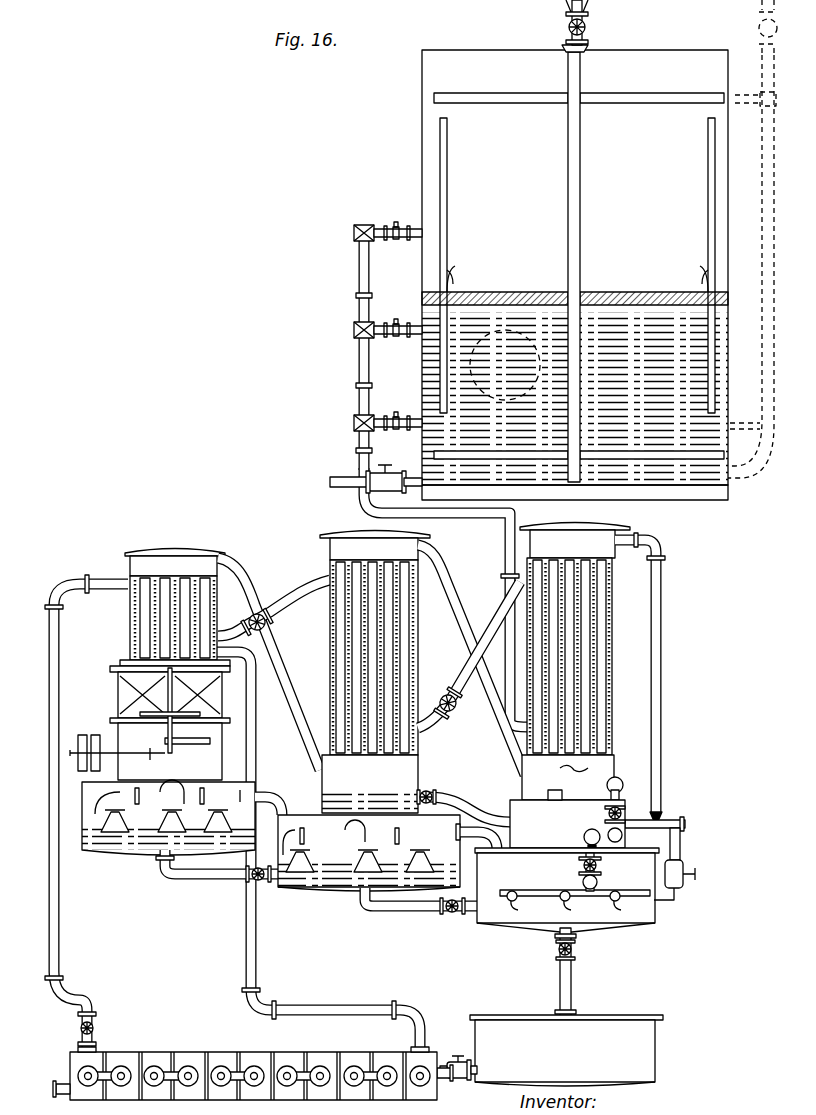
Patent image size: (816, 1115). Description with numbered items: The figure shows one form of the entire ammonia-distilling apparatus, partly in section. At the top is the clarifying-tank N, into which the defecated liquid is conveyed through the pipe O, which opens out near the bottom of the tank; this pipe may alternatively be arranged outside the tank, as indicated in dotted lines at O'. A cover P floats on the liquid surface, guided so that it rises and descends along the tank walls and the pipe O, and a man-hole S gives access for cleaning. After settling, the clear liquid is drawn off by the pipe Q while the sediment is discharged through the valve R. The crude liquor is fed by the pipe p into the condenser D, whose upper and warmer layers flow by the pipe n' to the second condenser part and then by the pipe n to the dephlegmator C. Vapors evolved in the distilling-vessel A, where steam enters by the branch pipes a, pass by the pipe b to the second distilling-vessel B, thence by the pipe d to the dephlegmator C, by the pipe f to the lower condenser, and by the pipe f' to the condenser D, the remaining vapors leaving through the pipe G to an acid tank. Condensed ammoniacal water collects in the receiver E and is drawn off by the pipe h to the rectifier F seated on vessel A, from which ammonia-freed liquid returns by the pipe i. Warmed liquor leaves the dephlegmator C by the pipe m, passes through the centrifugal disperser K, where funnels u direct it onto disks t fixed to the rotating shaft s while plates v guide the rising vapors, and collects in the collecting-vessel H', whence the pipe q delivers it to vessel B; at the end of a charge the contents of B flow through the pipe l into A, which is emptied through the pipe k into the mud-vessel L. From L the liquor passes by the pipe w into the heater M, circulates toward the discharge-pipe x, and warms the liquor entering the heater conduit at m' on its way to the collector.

The clarifying-tank N is at (408, 154).
The pipe O is at (586, 241).
The pipe (arranged outside the tank) O' is at (752, 239).
The cover P is at (575, 289).
The man-hole S is at (505, 365).
The pipe Q is at (372, 346).
The valve R is at (330, 482).
The pipe p is at (506, 542).
The dephlegmator C is at (175, 608).
The condenser D is at (575, 639).
The pipe f is at (269, 664).
The pipe n is at (274, 603).
The pipe f' is at (471, 660).
The pipe n' is at (469, 655).
The pipe G is at (650, 696).
The pipe m is at (76, 812).
The tubular conduit inlet m' is at (66, 1029).
The centrifugal disperser K is at (105, 711).
The funnel u is at (142, 695).
The shaft s is at (176, 710).
The disk t is at (170, 704).
The plates or fillings v is at (197, 696).
The collecting-vessel H' is at (168, 817).
The pipe d is at (256, 799).
The pipe q is at (217, 876).
The second distilling-vessel B is at (369, 853).
The pipe b is at (466, 829).
The pipe l is at (421, 910).
The receiver E is at (568, 777).
The pipe h is at (447, 798).
The rectifier F is at (567, 819).
The pipe i is at (584, 836).
The distilling-vessel A is at (522, 884).
The branch pipes a is at (606, 910).
The pipe k is at (573, 973).
The mud-vessel L is at (566, 1050).
The pipe w is at (457, 1079).
The heater M is at (214, 1049).
The discharge-pipe x is at (51, 1092).